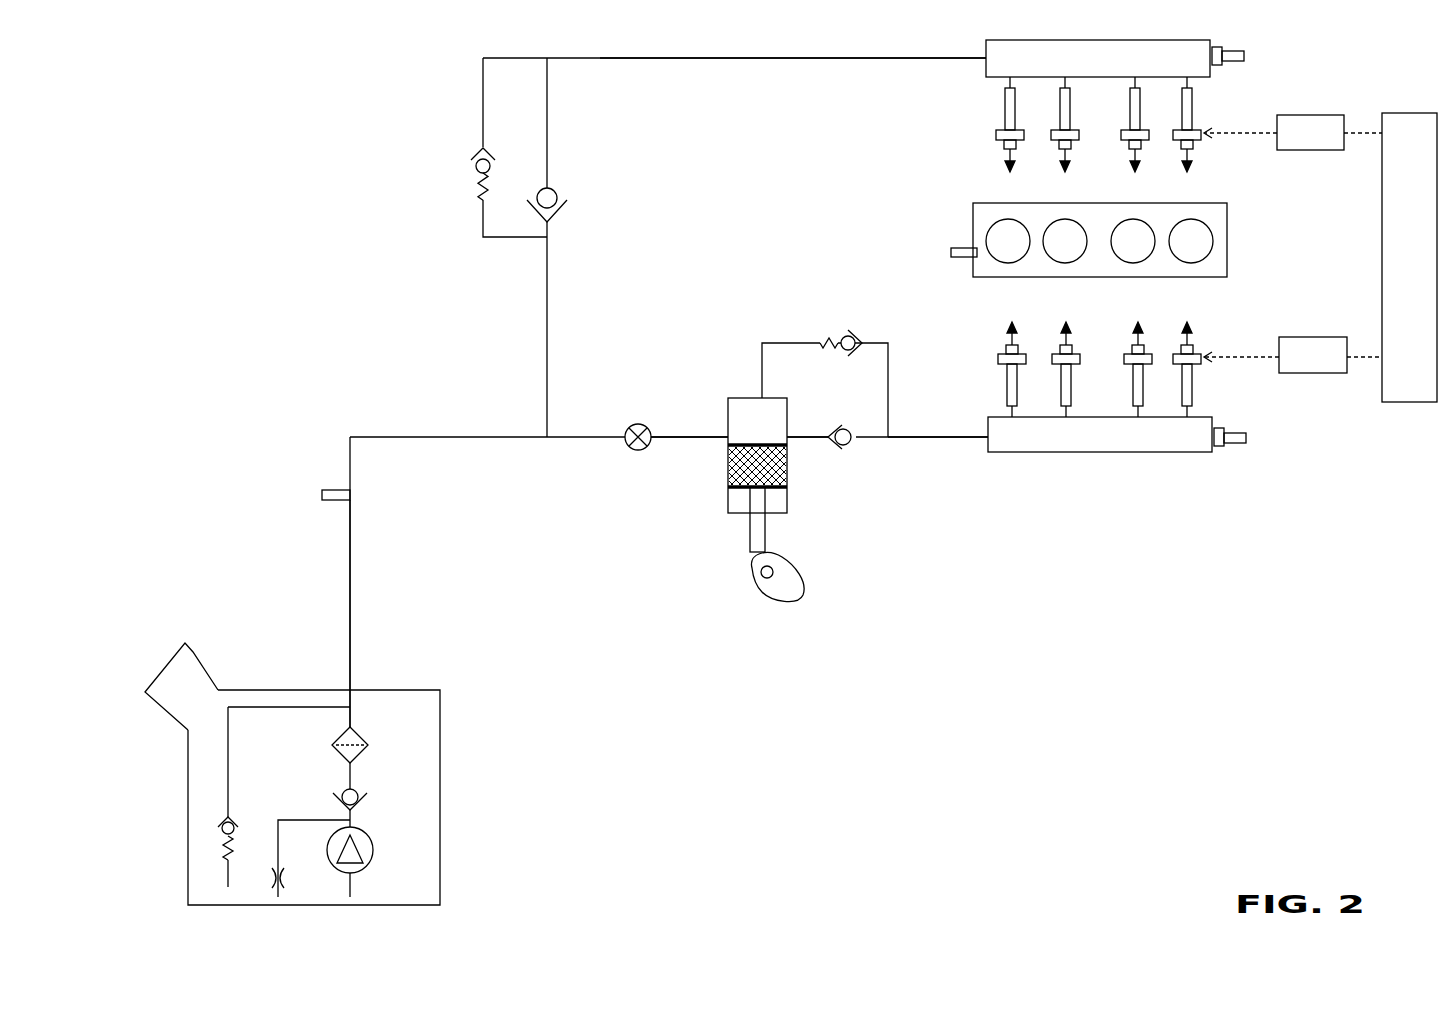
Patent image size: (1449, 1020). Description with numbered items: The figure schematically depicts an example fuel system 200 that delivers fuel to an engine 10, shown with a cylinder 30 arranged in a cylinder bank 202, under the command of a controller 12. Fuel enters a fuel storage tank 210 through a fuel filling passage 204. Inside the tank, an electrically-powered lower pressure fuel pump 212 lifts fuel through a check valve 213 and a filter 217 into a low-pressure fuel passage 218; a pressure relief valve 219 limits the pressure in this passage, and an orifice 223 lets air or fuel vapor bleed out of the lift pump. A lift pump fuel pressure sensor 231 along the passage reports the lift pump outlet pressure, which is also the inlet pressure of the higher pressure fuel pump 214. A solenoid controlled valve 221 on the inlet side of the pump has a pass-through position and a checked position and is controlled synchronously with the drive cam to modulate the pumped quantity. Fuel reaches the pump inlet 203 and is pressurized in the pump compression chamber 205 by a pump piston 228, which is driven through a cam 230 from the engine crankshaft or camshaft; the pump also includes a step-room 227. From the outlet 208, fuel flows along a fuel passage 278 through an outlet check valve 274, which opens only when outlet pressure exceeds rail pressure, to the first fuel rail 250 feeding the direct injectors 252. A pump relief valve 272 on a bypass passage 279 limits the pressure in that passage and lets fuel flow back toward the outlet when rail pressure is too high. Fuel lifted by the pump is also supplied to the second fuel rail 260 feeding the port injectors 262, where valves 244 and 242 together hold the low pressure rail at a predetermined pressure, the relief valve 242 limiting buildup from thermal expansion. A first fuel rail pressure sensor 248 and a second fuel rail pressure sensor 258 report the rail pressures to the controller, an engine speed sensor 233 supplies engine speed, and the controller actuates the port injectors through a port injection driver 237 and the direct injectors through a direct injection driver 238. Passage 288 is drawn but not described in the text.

The fuel system 200 is at (147, 93).
The engine 10 is at (931, 163).
The cylinder bank 202 is at (1225, 237).
The cylinder 30 is at (997, 252).
The controller 12 is at (1399, 269).
The port injection driver 237 is at (1294, 145).
The direct injection driver 238 is at (1297, 367).
The fuel filling passage 204 is at (205, 673).
The fuel storage tank 210 is at (441, 815).
The lower pressure fuel pump 212 is at (368, 860).
The check valve 213 is at (362, 790).
The filter 217 is at (360, 738).
The fuel passage 218 is at (351, 653).
The pressure relief valve 219 is at (214, 852).
The orifice 223 is at (272, 878).
The solenoid controlled valve 221 is at (633, 425).
The inlet 203 is at (726, 436).
The pump compression chamber 205 is at (772, 425).
The outlet 208 is at (793, 435).
The higher pressure fuel pump 214 is at (747, 397).
The step-room 227 is at (738, 512).
The pump piston 228 is at (775, 490).
The cam 230 is at (800, 593).
The lift pump fuel pressure sensor 231 is at (338, 490).
The engine speed sensor 233 is at (968, 250).
The pressure relief valve 242 is at (473, 150).
The valve 244 is at (553, 187).
The first fuel rail pressure sensor 248 is at (1240, 433).
The first fuel rail 250 is at (1200, 413).
The direct injectors 252 is at (1125, 353).
The second fuel rail pressure sensor 258 is at (1233, 60).
The second fuel rail 260 is at (1197, 77).
The port injectors 262 is at (1121, 137).
The pressure relief valve 272 is at (828, 340).
The check valve 274 is at (827, 425).
The fuel passage 278 is at (918, 436).
The bypass passage 279 is at (786, 343).
The port injection supply passage 288 is at (684, 57).